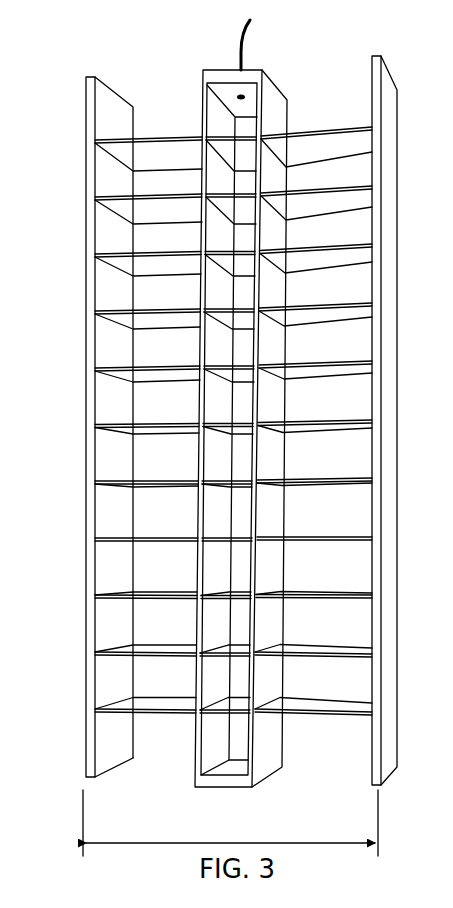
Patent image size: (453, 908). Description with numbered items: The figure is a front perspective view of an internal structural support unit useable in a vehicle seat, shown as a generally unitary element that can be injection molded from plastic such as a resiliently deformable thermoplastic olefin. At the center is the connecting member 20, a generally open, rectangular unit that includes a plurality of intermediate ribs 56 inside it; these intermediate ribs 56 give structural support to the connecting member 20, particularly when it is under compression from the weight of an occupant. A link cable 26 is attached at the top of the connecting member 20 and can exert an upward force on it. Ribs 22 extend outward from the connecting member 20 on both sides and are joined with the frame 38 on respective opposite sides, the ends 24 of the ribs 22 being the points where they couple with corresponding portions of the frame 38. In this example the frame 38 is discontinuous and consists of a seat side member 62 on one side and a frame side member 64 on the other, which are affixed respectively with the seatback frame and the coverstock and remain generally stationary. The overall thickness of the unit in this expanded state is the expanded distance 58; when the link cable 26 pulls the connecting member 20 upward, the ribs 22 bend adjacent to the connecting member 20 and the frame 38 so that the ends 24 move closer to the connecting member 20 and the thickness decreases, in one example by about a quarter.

The connecting member 20 is at (218, 77).
The ribs 22 is at (158, 203).
The ends 24 is at (113, 208).
The link cable 26 is at (240, 38).
The frame 38 is at (394, 67).
The intermediate ribs 56 is at (264, 147).
The expanded distance 58 is at (153, 843).
The seat side member 62 is at (88, 100).
The frame side member 64 is at (388, 126).